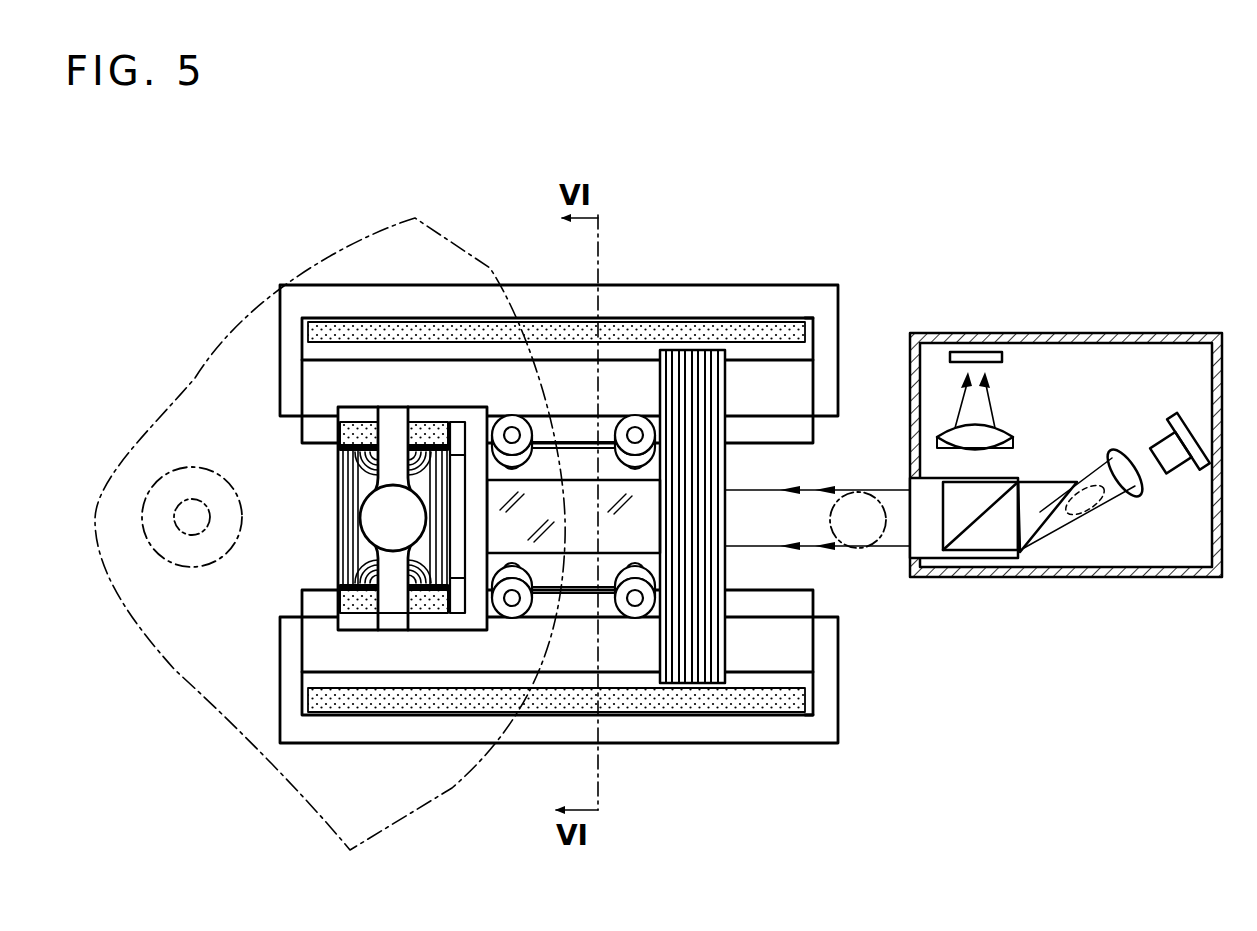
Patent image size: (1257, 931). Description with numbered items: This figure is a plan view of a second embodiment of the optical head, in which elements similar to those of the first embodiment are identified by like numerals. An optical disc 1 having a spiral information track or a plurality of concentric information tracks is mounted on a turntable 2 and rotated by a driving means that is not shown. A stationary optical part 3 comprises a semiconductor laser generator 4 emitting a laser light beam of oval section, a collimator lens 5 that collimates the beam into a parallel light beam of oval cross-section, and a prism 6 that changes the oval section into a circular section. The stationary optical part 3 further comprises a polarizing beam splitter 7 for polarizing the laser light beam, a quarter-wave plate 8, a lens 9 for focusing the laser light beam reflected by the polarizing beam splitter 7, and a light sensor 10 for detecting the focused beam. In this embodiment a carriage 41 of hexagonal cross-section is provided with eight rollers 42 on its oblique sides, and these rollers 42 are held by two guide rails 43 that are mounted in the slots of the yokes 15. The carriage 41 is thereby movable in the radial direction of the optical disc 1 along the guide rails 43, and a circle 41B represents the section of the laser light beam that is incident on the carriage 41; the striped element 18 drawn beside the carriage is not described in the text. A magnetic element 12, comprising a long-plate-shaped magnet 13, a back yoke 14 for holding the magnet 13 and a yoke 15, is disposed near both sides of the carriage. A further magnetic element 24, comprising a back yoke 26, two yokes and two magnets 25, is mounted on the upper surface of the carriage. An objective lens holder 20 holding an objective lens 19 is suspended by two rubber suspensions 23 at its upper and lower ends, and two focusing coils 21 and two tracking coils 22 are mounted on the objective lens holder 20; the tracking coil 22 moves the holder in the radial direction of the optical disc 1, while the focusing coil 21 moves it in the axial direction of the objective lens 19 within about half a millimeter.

The optical disc 1 is at (475, 262).
The turntable 2 is at (190, 512).
The stationary optical part 3 is at (1078, 333).
The semiconductor laser generator 4 is at (1170, 428).
The collimator lens 5 is at (1125, 446).
The prism 6 is at (1042, 516).
The polarizing beam splitter 7 is at (990, 552).
The quarter-wave plate 8 is at (926, 560).
The lens 9 is at (1002, 425).
The light sensor 10 is at (975, 352).
The magnetic element 12 is at (637, 283).
The magnet 13 is at (658, 330).
The back yoke 14 is at (716, 318).
The yoke 15 is at (757, 380).
The grating 18 is at (723, 647).
The objective lens 19 is at (345, 573).
The objective lens holder 20 is at (363, 485).
The focusing coil 21 is at (358, 596).
The tracking coil 22 is at (352, 548).
The rubber suspension 23 is at (390, 413).
The magnetic element 24 is at (408, 396).
The magnet 25 is at (428, 424).
The back yoke 26 is at (445, 412).
The carriage 41 is at (582, 490).
The circle 41B is at (878, 548).
The rollers 42 is at (512, 416).
The guide rails 43 is at (813, 433).